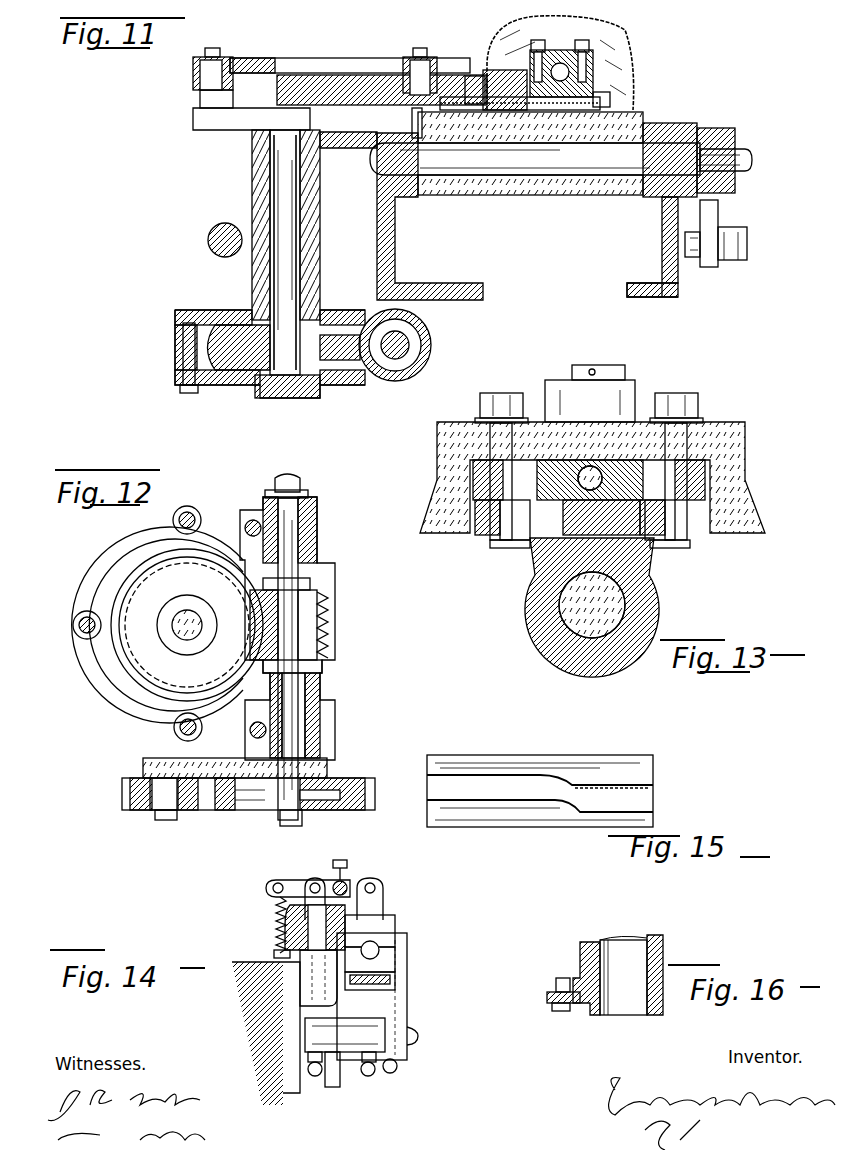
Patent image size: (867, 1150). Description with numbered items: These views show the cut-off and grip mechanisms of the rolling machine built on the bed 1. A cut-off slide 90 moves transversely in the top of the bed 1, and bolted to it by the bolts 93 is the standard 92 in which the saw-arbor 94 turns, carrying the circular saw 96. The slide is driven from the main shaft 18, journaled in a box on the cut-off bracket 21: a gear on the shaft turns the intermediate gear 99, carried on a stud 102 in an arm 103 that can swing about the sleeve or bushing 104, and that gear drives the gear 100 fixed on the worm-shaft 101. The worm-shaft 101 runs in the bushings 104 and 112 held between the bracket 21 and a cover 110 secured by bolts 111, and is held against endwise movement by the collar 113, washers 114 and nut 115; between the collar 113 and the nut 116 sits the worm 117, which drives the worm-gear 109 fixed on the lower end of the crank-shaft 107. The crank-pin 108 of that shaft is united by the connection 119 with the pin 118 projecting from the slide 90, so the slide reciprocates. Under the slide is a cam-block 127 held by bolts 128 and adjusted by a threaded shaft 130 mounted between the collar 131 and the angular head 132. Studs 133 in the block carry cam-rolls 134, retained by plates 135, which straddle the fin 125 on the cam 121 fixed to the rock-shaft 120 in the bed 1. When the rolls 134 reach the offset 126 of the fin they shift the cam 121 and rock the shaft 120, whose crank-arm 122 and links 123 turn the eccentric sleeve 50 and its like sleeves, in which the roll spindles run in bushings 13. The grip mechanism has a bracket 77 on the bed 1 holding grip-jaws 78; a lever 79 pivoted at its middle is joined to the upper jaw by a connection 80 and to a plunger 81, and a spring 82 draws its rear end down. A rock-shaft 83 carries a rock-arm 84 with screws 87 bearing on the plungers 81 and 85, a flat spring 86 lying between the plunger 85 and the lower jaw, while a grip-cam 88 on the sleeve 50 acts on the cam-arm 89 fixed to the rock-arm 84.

In FIG. 11, the bed 1 is at (674, 292).
In FIG. 14, the bed 1 is at (280, 1105).
In FIG. 16, the bushings 13 is at (612, 1015).
In FIG. 11, the main shaft 18 is at (210, 248).
In FIG. 11, the cut-off bracket 21 is at (252, 160).
In FIG. 16, the sleeve 50 is at (585, 950).
In FIG. 14, the bracket 77 is at (400, 1003).
In FIG. 14, the grip-jaws 78 is at (398, 952).
In FIG. 14, the lever 79 is at (300, 880).
In FIG. 14, the connection 80 is at (382, 900).
In FIG. 14, the plunger 81 is at (286, 932).
In FIG. 14, the spring 82 is at (276, 905).
In FIG. 14, the rock-shaft 83 is at (418, 1037).
In FIG. 14, the rock-arm 84 is at (352, 1054).
In FIG. 14, the plunger 85 is at (375, 983).
In FIG. 14, the flat spring 86 is at (398, 975).
In FIG. 14, the screws 87 is at (314, 1078).
In FIG. 16, the grip-cam 88 is at (550, 1000).
In FIG. 14, the cam-arm 89 is at (333, 1090).
In FIG. 11, the cut-off slide 90 is at (357, 75).
In FIG. 13, the cut-off slide 90 is at (745, 452).
In FIG. 11, the standard 92 is at (593, 58).
In FIG. 11, the bolts 93 is at (560, 55).
In FIG. 11, the saw-arbor 94 is at (635, 65).
In FIG. 11, the circular saw 96 is at (610, 97).
In FIG. 12, the intermediate gear 99 is at (122, 805).
In FIG. 12, the gear 100 is at (355, 812).
In FIG. 12, the worm-shaft 101 is at (300, 738).
In FIG. 12, the stud 102 is at (165, 815).
In FIG. 12, the arm 103 is at (327, 768).
In FIG. 12, the sleeve or bushing 104 is at (320, 712).
In FIG. 11, the crank-shaft 107 is at (278, 192).
In FIG. 12, the crank-shaft 107 is at (185, 636).
In FIG. 11, the crank-pin 108 is at (200, 78).
In FIG. 11, the worm-gear 109 is at (230, 370).
In FIG. 12, the worm-gear 109 is at (125, 675).
In FIG. 11, the cover 110 is at (352, 385).
In FIG. 12, the cover 110 is at (120, 548).
In FIG. 11, the bolts 111 is at (180, 390).
In FIG. 12, the bolts 111 is at (180, 515).
In FIG. 12, the sleeve or bushing 112 is at (317, 540).
In FIG. 12, the collar 113 is at (322, 666).
In FIG. 12, the washers 114 is at (308, 494).
In FIG. 12, the nut 115 is at (300, 483).
In FIG. 12, the nut 116 is at (310, 584).
In FIG. 12, the worm 117 is at (318, 630).
In FIG. 11, the pin 118 is at (430, 52).
In FIG. 13, the pin 118 is at (600, 368).
In FIG. 11, the connection 119 is at (303, 50).
In FIG. 13, the connection 119 is at (565, 380).
In FIG. 11, the rock-shaft 120 is at (752, 160).
In FIG. 13, the rock-shaft 120 is at (565, 620).
In FIG. 11, the cam 121 is at (548, 192).
In FIG. 13, the cam 121 is at (560, 650).
In FIG. 15, the cam 121 is at (645, 770).
In FIG. 11, the crank-arm 122 is at (718, 216).
In FIG. 11, the links 123 is at (728, 262).
In FIG. 13, the fin 125 is at (565, 565).
In FIG. 15, the fin 125 is at (645, 800).
In FIG. 15, the offset 126 is at (565, 780).
In FIG. 11, the cam-block 127 is at (412, 112).
In FIG. 13, the cam-block 127 is at (625, 460).
In FIG. 13, the bolts 128 is at (498, 393).
In FIG. 11, the shaft 130 is at (473, 76).
In FIG. 13, the shaft 130 is at (589, 466).
In FIG. 11, the collar 131 is at (500, 70).
In FIG. 11, the head 132 is at (605, 105).
In FIG. 13, the studs 133 is at (512, 540).
In FIG. 13, the cam-rolls 134 is at (705, 515).
In FIG. 13, the plates 135 is at (500, 548).